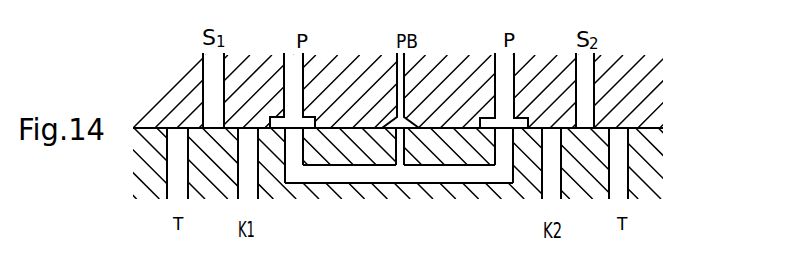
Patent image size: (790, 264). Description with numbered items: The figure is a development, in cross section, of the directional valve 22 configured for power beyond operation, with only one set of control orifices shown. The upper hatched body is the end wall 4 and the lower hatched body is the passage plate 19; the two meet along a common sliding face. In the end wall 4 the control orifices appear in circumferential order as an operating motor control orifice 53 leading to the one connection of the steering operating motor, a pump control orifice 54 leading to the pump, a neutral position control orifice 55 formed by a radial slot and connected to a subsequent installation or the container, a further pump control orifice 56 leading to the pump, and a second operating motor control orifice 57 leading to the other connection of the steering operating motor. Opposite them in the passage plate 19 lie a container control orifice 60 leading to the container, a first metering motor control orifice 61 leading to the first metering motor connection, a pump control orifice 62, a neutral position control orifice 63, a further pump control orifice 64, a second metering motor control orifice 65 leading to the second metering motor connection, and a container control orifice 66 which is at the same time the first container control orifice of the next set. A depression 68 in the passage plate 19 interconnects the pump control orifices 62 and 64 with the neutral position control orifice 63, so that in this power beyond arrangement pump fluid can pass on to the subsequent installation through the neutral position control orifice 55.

The end wall 4 is at (166, 68).
The passage plate 19 is at (148, 182).
The directional valve 22 is at (116, 108).
The operating motor control orifice 53 is at (210, 77).
The pump control orifice 54 is at (292, 67).
The neutral position control orifice 55 is at (399, 72).
The pump control orifice 56 is at (509, 72).
The operating motor control orifice 57 is at (587, 73).
The container control orifice 60 is at (191, 192).
The first metering motor control orifice 61 is at (262, 192).
The pump control orifice 62 is at (295, 150).
The neutral position control orifice 63 is at (398, 157).
The further pump control orifice 64 is at (507, 153).
The second metering motor control orifice 65 is at (562, 186).
The container control orifice 66 is at (628, 186).
The depression 68 is at (366, 176).